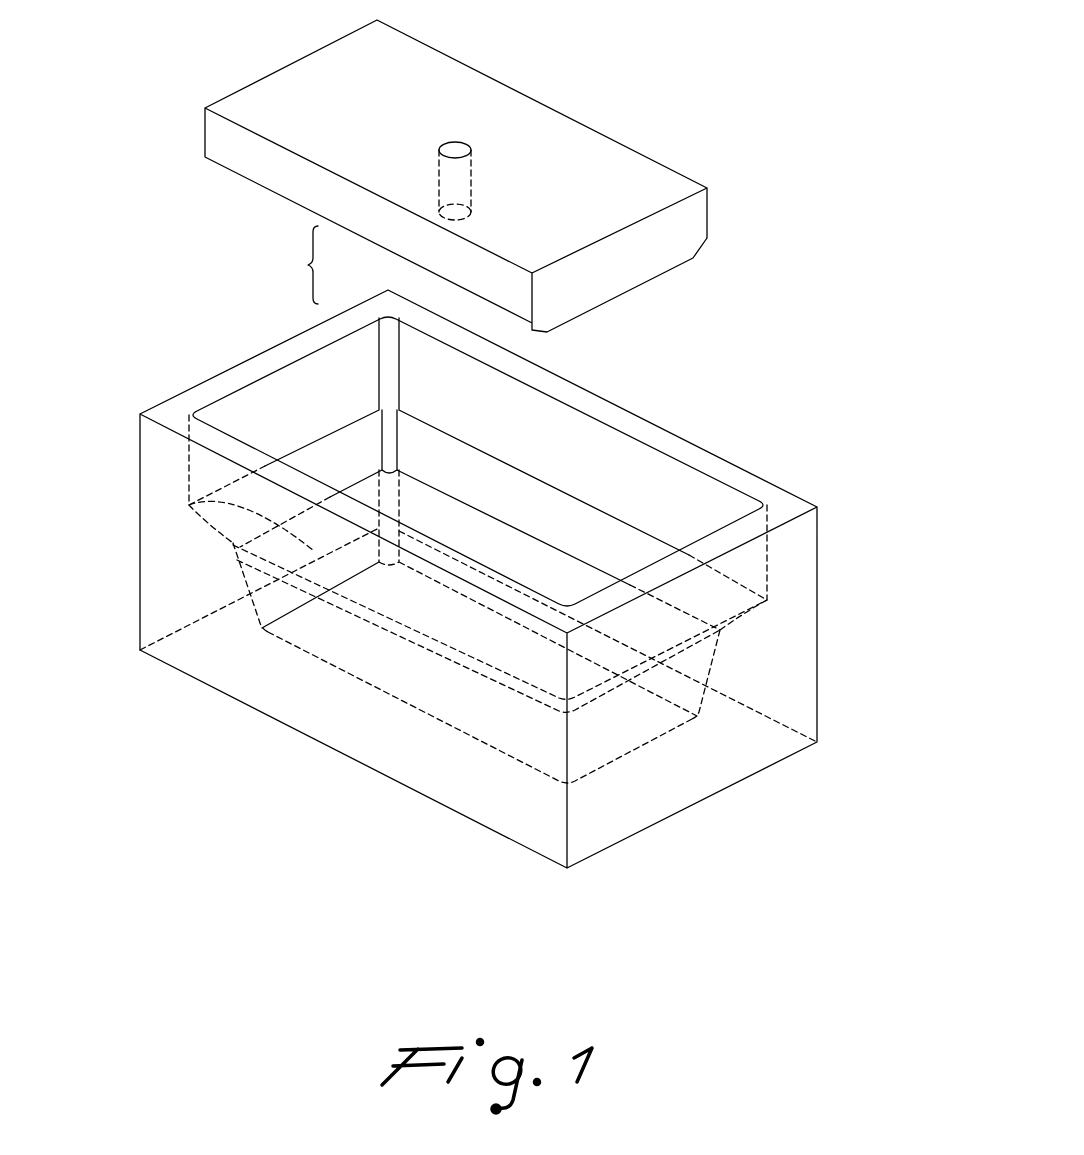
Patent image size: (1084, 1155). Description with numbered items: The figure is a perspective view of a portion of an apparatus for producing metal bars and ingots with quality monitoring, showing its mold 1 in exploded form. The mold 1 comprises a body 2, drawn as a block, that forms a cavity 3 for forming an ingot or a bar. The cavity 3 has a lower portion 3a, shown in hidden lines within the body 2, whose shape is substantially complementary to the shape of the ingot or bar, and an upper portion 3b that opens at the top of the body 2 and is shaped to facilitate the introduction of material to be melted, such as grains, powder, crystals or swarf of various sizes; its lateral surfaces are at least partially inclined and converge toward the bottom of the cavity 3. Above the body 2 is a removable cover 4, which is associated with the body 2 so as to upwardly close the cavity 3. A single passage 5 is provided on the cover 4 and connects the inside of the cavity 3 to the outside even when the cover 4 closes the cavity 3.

The mold 1 is at (505, 444).
The body 2 is at (485, 573).
The cavity 3 is at (406, 530).
The lower portion 3a is at (189, 505).
The upper portion 3b is at (294, 427).
The removable cover 4 is at (456, 176).
The passage 5 is at (457, 146).